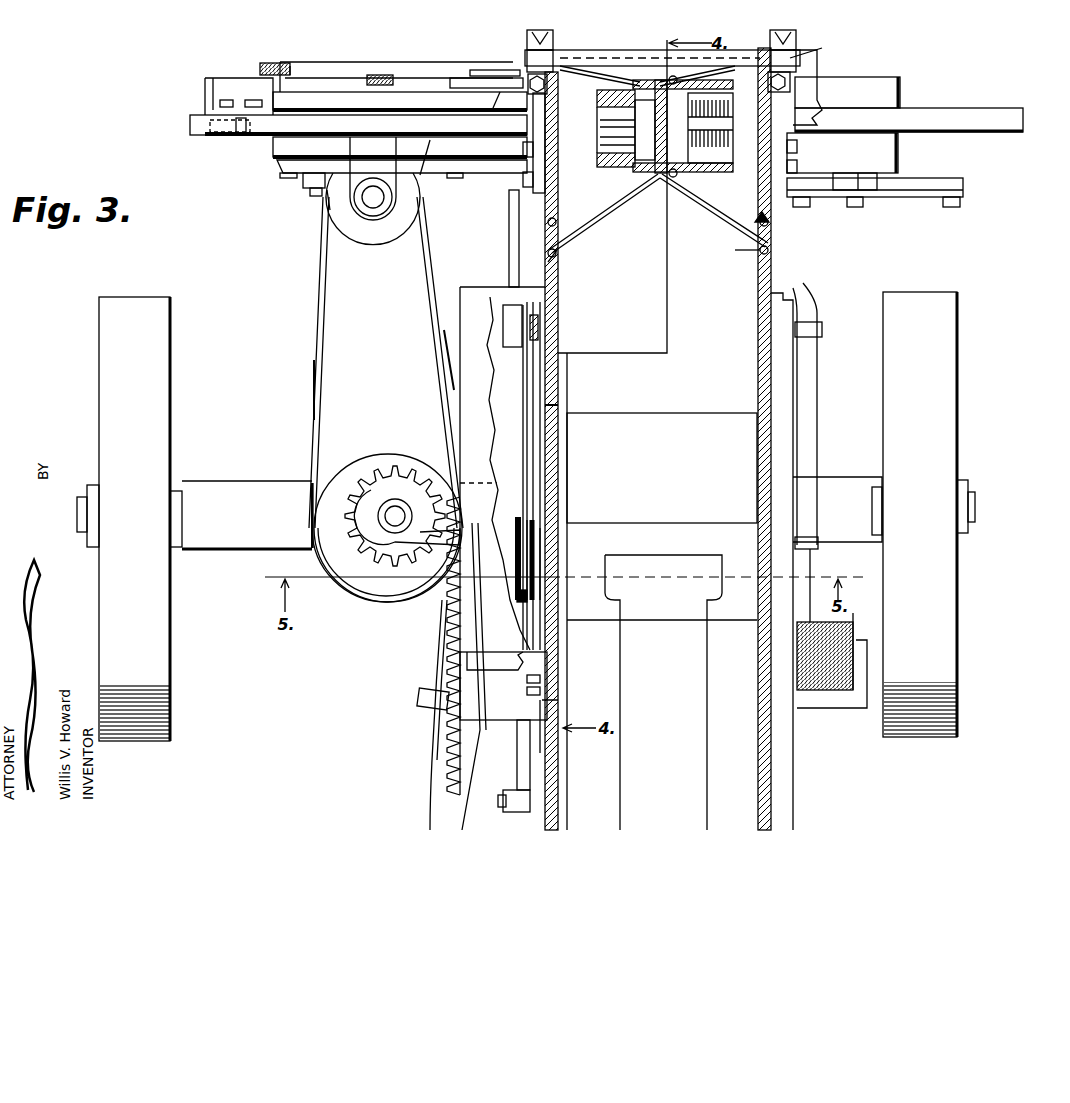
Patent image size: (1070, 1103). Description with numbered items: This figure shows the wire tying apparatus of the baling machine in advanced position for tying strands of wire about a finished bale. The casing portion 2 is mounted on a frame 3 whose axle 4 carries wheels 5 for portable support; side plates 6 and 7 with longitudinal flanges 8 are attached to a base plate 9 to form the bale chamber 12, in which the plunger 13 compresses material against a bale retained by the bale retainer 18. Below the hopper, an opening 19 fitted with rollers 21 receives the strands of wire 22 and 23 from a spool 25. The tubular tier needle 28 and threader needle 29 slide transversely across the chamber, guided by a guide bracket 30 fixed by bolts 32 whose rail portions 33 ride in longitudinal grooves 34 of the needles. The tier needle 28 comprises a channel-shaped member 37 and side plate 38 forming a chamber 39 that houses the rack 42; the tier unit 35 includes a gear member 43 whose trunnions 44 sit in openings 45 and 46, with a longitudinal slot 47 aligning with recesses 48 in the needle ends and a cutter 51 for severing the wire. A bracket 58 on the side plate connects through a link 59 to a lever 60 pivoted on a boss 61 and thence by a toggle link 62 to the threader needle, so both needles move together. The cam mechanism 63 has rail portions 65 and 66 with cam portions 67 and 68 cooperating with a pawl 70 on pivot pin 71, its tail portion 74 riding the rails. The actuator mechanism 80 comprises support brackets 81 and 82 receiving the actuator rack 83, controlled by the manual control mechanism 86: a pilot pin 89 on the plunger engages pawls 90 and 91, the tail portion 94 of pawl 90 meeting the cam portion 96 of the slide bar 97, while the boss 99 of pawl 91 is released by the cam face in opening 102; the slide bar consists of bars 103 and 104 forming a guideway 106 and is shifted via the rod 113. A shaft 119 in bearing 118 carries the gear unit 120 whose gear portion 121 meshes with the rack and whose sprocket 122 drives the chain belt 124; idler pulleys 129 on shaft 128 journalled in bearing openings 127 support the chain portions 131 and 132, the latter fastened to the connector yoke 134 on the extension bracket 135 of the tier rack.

The casing portion 2 is at (559, 390).
The frame 3 is at (822, 477).
The axle 4 is at (975, 507).
The wheels 5 is at (935, 640).
The side plate 6 is at (560, 750).
The side plate 7 is at (772, 205).
The longitudinal flanges 8 is at (800, 95).
The base plate 9 is at (772, 243).
The bale chamber 12 is at (770, 270).
The plunger 13 is at (672, 432).
The bale retainer 18 is at (811, 46).
The opening 19 is at (560, 258).
The rollers 21 is at (758, 212).
The strand of wire 22 is at (590, 228).
The strand of wire 23 is at (428, 805).
The spool 25 is at (822, 690).
The tier needle 28 is at (268, 135).
The threader needle 29 is at (896, 150).
The guide bracket 30 is at (305, 165).
The bolts 32 is at (522, 180).
The rail portions 33 is at (920, 114).
The longitudinal grooves 34 is at (893, 108).
The tier unit 35 is at (668, 215).
The channel-shaped member 37 is at (295, 105).
The side plate 38 is at (278, 160).
The chamber 39 is at (618, 166).
The rack 42 is at (797, 150).
The gear member 43 is at (602, 145).
The trunnions 44 is at (733, 125).
The opening 45 is at (600, 105).
The opening 46 is at (655, 178).
The longitudinal slot 47 is at (672, 182).
The recesses 48 is at (654, 62).
The cutter 51 is at (600, 123).
The bracket 58 is at (320, 178).
The link 59 is at (478, 192).
The lever 60 is at (825, 186).
The boss 61 is at (848, 185).
The toggle link 62 is at (818, 195).
The cam mechanism 63 is at (318, 62).
The rail portion 65 is at (455, 70).
The rail portion 66 is at (288, 63).
The cam portion 67 is at (265, 63).
The cam portion 68 is at (382, 75).
The pawl 70 is at (478, 70).
The pivot pin 71 is at (493, 108).
The tail portion 74 is at (525, 108).
The actuator mechanism 80 is at (445, 622).
The support bracket 81 is at (503, 712).
The support bracket 82 is at (515, 275).
The actuator rack 83 is at (522, 430).
The manual control mechanism 86 is at (517, 775).
The pilot pin 89 is at (560, 575).
The pawl 90 is at (560, 513).
The pawl 91 is at (560, 490).
The tail portion 94 is at (545, 600).
The cam portion 96 is at (503, 320).
The slide bar 97 is at (528, 302).
The boss 99 is at (565, 525).
The opening 102 is at (495, 335).
The bar 103 is at (528, 378).
The bar 104 is at (560, 405).
The guideway 106 is at (540, 340).
The rod 113 is at (560, 722).
The bearing 118 is at (385, 498).
The shaft 119 is at (396, 506).
The gear unit 120 is at (350, 585).
The gear portion 121 is at (382, 552).
The sprocket 122 is at (318, 515).
The chain belt 124 is at (318, 312).
The bearing openings 127 is at (368, 216).
The shaft 128 is at (372, 186).
The idler pulleys 129 is at (330, 210).
The chain portion 131 is at (312, 380).
The chain portion 132 is at (455, 378).
The connector yoke 134 is at (210, 126).
The extension bracket 135 is at (235, 136).